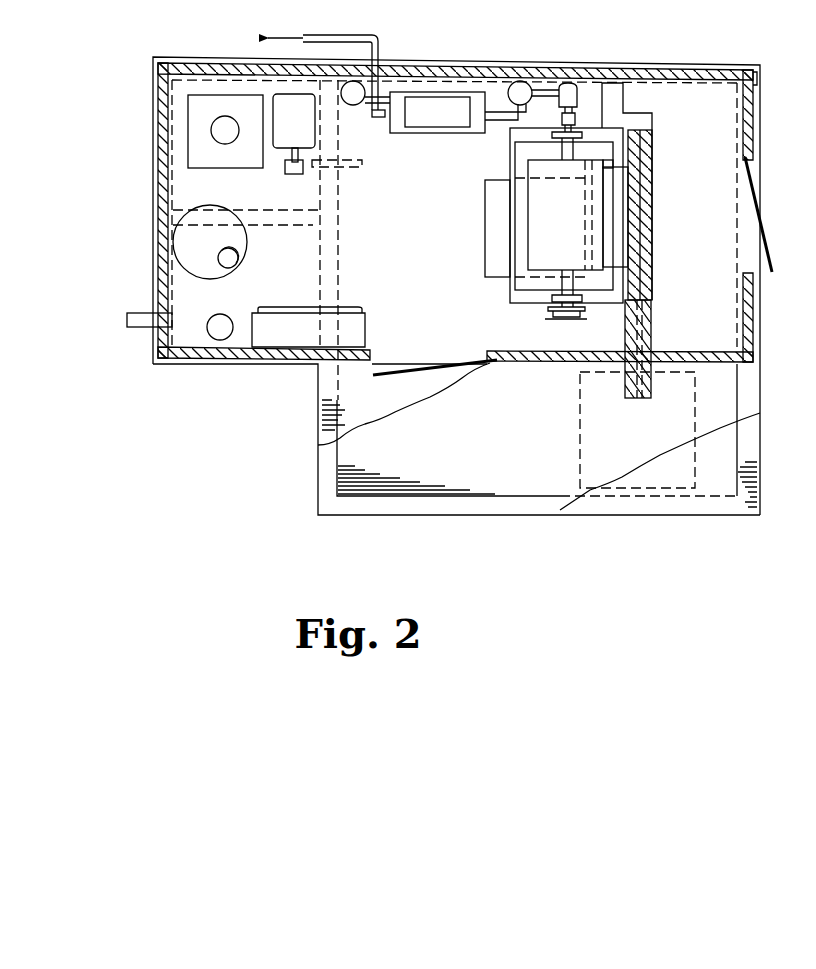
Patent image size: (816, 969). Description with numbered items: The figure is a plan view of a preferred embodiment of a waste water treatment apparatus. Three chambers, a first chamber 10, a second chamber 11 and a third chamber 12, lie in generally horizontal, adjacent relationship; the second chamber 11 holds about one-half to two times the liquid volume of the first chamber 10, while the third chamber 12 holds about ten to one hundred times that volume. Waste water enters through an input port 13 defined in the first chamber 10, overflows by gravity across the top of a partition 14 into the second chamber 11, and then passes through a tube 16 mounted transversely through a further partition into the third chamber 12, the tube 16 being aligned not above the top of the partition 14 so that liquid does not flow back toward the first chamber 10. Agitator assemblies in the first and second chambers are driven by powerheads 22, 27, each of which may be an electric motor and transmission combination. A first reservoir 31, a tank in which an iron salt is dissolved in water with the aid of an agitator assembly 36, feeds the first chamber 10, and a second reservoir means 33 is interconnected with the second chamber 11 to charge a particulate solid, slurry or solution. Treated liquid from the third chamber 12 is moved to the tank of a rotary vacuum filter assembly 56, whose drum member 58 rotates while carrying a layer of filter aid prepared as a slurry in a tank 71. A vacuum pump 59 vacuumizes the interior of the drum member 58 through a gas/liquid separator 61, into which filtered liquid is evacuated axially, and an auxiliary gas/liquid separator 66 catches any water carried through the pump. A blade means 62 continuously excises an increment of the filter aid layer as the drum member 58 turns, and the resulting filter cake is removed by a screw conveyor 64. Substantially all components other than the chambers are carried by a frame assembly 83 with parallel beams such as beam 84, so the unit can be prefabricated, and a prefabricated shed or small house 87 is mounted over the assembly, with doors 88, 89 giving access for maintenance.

The first chamber 10 is at (310, 263).
The second chamber 11 is at (308, 192).
The third chamber 12 is at (518, 442).
The input port 13 is at (138, 328).
The partition 14 is at (293, 220).
The tube 16 is at (362, 163).
The powerhead 22 is at (215, 333).
The powerhead 27 is at (212, 133).
The first reservoir 31 is at (183, 253).
The second reservoir means 33 is at (307, 134).
The agitator assembly 36 is at (232, 262).
The rotary vacuum filter assembly 56 is at (504, 153).
The drum member 58 is at (603, 162).
The vacuum pump 59 is at (442, 117).
The gas/liquid separator 61 is at (521, 80).
The blade means 62 is at (617, 225).
The screw conveyor 64 is at (640, 337).
The auxiliary gas/liquid separator 66 is at (353, 105).
The tank 71 is at (497, 265).
The frame assembly 83 is at (158, 69).
The beam 84 is at (156, 365).
The shed or small house 87 is at (754, 128).
The door 88 is at (425, 368).
The door 89 is at (762, 226).